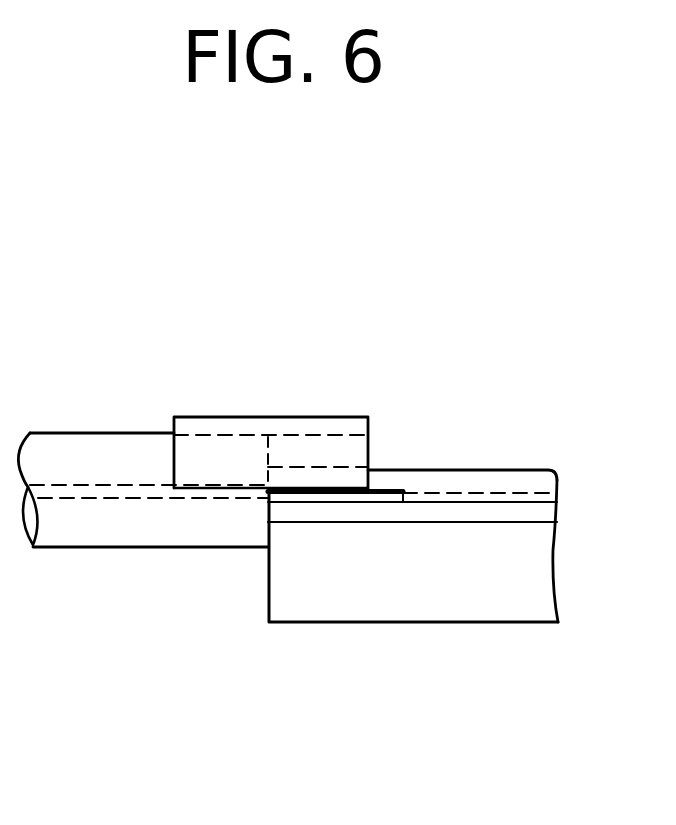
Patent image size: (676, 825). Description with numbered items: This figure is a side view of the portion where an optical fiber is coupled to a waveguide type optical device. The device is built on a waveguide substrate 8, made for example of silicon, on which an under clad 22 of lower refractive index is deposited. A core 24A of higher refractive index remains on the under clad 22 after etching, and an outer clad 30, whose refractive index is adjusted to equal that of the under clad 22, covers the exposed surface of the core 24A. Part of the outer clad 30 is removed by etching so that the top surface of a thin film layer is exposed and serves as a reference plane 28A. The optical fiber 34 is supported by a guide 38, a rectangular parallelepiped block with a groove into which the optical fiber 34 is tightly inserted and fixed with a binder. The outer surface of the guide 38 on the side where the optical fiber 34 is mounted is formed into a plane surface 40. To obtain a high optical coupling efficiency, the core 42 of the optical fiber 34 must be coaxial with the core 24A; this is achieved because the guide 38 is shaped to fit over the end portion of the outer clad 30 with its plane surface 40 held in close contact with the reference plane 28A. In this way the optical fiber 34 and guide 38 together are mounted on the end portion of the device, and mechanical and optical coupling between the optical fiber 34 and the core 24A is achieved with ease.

The waveguide substrate 8 is at (493, 610).
The under clad 22 is at (502, 517).
The core 24A is at (488, 492).
The reference plane 28A is at (375, 491).
The outer clad 30 is at (432, 477).
The optical fiber 34 is at (102, 550).
The guide 38 is at (267, 423).
The plane surface 40 is at (193, 486).
The core of the optical fiber 42 is at (163, 500).